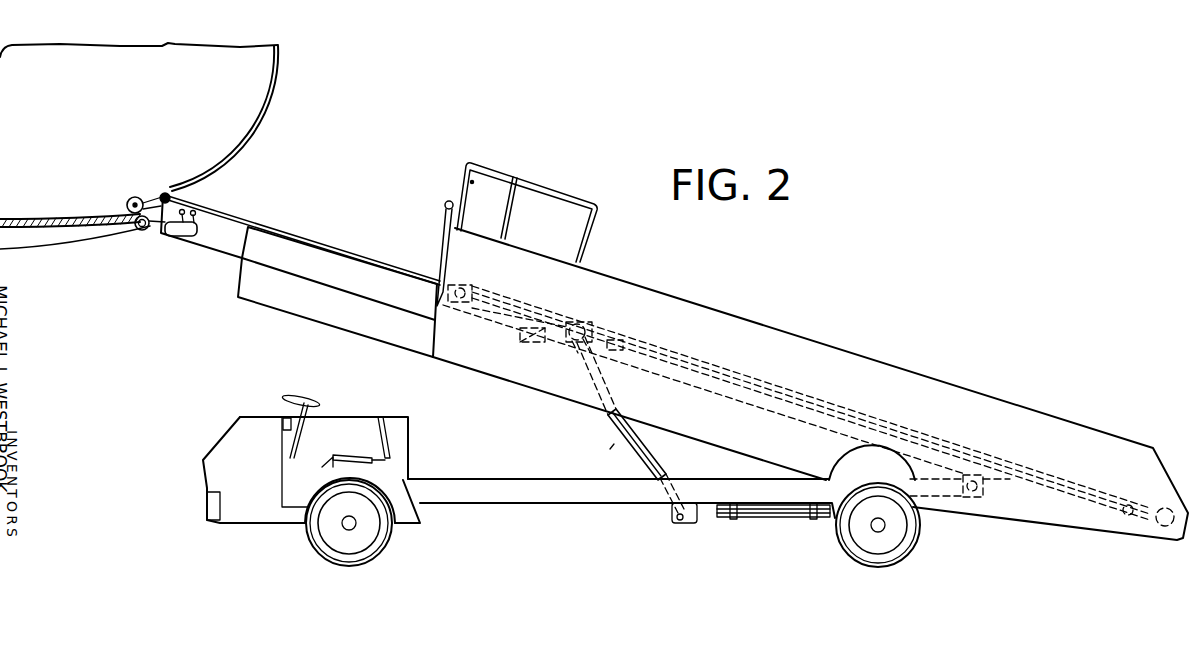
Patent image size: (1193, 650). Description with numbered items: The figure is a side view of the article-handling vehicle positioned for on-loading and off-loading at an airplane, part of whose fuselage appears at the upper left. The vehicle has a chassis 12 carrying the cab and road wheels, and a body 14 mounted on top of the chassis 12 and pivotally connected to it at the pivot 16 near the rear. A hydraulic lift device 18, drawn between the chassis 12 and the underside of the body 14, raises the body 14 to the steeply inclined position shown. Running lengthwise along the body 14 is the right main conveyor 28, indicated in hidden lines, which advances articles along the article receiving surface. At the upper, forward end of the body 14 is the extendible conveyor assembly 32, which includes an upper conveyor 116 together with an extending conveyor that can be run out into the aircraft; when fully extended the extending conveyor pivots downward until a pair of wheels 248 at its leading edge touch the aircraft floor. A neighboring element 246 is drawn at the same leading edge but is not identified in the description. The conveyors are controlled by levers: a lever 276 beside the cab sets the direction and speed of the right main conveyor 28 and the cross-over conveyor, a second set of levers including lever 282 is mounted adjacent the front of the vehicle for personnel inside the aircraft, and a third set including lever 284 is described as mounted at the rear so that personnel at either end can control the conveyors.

The chassis 12 is at (550, 503).
The body 14 is at (498, 372).
The pivotal connection 16 is at (963, 500).
The hydraulic lift device 18 is at (596, 460).
The right main conveyor 28 is at (1030, 461).
The extendible conveyor assembly 32 is at (335, 228).
The upper conveyor 116 is at (279, 221).
The lower roller 246 is at (141, 234).
The wheels 248 is at (138, 197).
The lever 276 is at (443, 230).
The lever 282 is at (198, 224).
The lever 284 is at (179, 210).